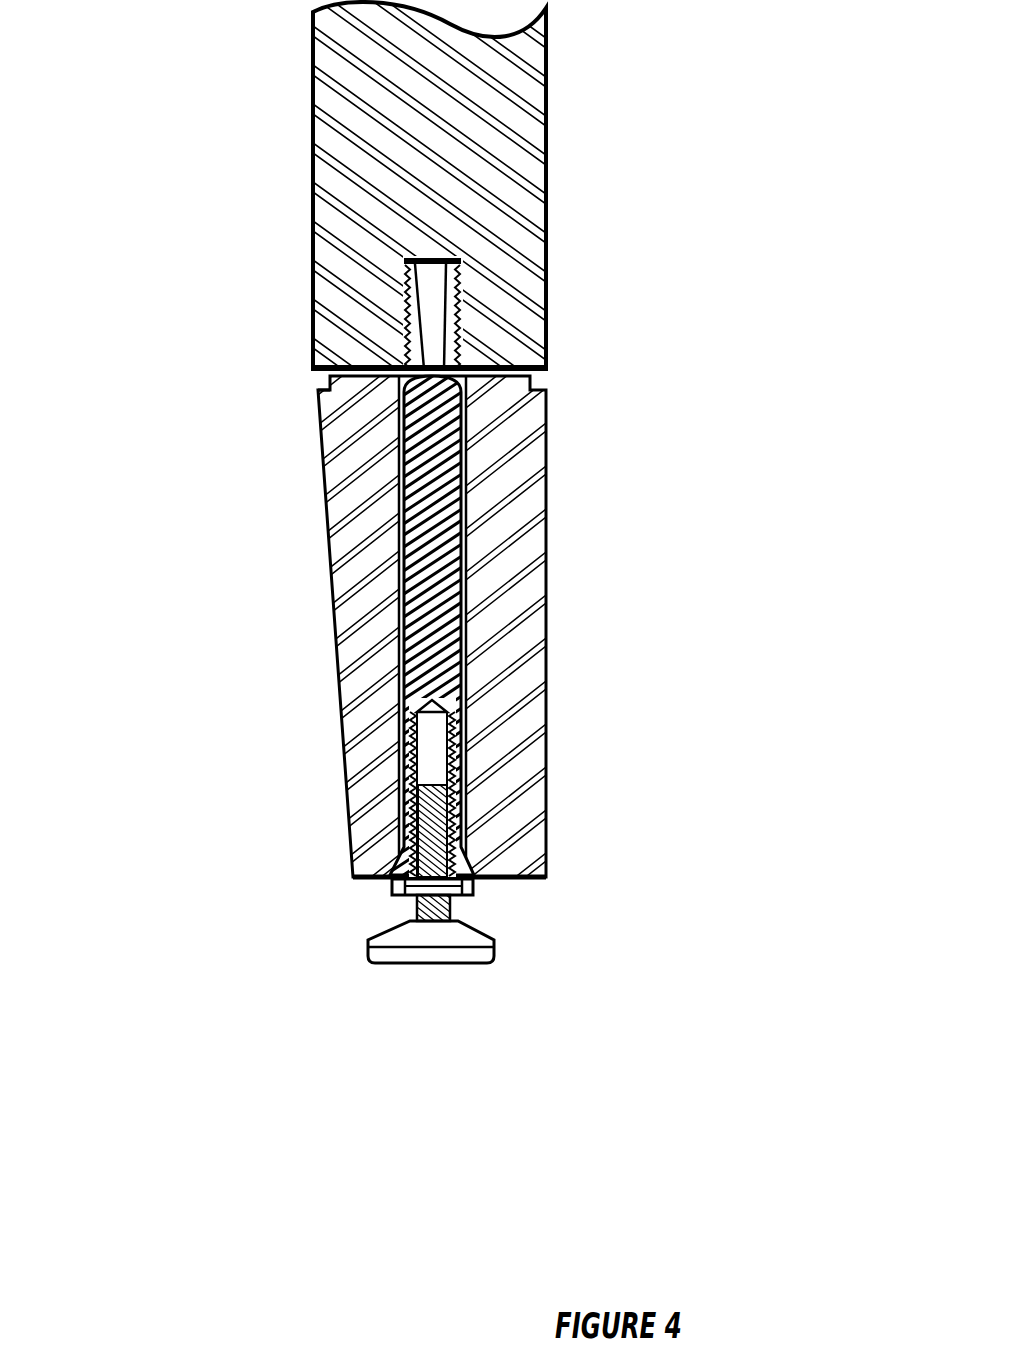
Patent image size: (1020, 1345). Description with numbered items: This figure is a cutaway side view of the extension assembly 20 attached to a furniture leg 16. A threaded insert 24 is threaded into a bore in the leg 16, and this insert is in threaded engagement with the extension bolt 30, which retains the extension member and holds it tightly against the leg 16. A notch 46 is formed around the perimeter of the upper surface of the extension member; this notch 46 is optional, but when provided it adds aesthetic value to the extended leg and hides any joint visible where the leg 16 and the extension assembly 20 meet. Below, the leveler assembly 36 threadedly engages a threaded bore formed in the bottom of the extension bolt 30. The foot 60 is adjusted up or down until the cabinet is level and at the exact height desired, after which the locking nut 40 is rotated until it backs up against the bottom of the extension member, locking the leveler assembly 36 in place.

The leg 16 is at (546, 52).
The threaded insert 24 is at (465, 298).
The extension assembly 20 is at (572, 957).
The extension bolt 30 is at (378, 477).
The notch 46 is at (288, 384).
The locking nut 40 is at (352, 910).
The leveler assembly 36 is at (514, 978).
The foot 60 is at (421, 963).